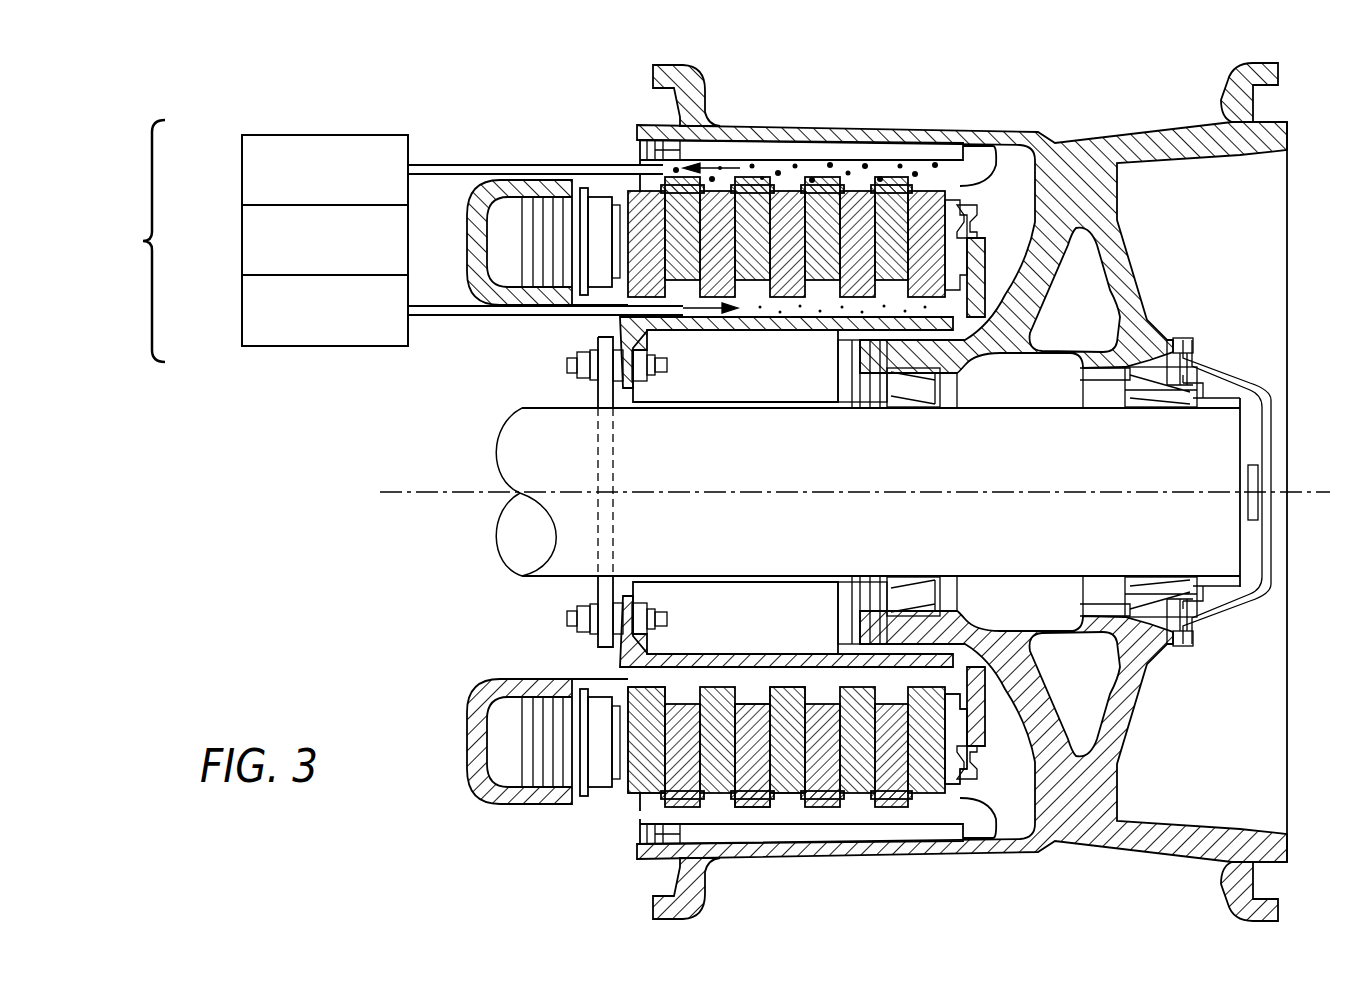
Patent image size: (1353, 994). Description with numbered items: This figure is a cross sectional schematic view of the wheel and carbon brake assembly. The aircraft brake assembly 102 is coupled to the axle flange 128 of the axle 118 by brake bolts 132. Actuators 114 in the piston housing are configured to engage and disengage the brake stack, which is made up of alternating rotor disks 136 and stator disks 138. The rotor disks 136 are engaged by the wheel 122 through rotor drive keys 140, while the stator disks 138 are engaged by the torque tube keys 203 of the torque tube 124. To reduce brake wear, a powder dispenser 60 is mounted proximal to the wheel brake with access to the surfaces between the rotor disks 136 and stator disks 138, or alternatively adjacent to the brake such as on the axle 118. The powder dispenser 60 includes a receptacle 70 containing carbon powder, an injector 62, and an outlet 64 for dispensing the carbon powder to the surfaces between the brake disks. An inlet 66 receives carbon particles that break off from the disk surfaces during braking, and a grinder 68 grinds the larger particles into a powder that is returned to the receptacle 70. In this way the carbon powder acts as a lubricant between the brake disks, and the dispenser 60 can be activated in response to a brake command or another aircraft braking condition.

The powder dispenser 60 is at (250, 225).
The grinder 68 is at (292, 135).
The receptacle 70 is at (243, 255).
The injector 62 is at (243, 335).
The inlet 66 is at (423, 170).
The outlet 64 is at (437, 314).
The actuators 114 is at (470, 183).
The aircraft brake assembly 102 is at (982, 68).
The wheel 122 is at (1182, 124).
The brake bolts 132 is at (580, 362).
The axle flange 128 is at (605, 443).
The axle 118 is at (754, 469).
The torque tube 124 is at (752, 658).
The torque tube keys 203 is at (690, 682).
The rotor disks 136 is at (747, 806).
The stator disks 138 is at (783, 782).
The rotor drive keys 140 is at (963, 808).